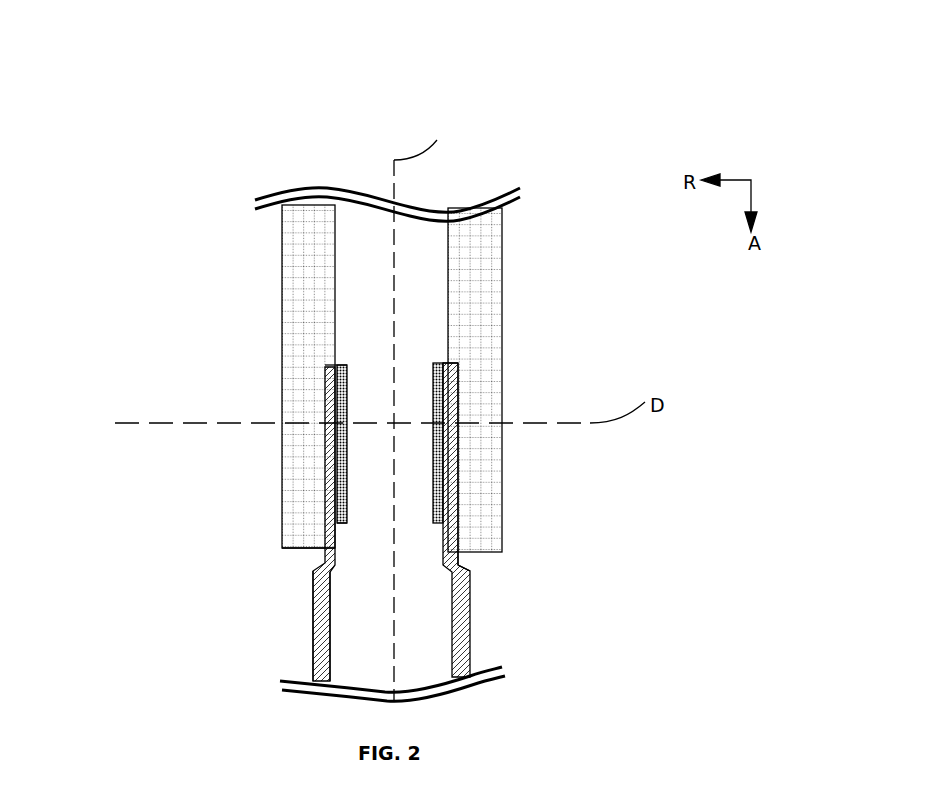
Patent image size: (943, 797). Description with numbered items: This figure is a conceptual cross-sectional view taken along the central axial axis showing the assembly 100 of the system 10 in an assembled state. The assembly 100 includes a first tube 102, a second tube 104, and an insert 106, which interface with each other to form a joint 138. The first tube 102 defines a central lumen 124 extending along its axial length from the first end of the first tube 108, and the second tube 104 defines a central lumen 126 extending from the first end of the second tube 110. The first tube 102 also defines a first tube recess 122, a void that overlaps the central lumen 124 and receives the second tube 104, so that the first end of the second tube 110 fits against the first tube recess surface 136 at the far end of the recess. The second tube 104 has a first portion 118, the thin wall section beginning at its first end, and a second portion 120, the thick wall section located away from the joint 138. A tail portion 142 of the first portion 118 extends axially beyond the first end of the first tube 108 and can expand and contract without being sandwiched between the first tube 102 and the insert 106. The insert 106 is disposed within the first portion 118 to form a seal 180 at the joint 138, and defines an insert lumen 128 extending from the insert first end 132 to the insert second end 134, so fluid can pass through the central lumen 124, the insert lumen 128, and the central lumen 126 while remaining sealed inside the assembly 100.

The system 10 is at (147, 88).
The assembly 100 is at (117, 248).
The first tube 102 is at (217, 313).
The second tube 104 is at (313, 578).
The insert 106 is at (333, 477).
The first end of the first tube 108 is at (307, 547).
The first end of the second tube 110 is at (452, 363).
The first portion 118 is at (460, 402).
The second portion 120 is at (335, 642).
The first tube recess 122 is at (448, 360).
The central lumen 124 is at (372, 240).
The central lumen 126 is at (405, 622).
The insert lumen 128 is at (423, 458).
The insert first end 132 is at (328, 402).
The insert second end 134 is at (345, 525).
The first tube recess surface 136 is at (336, 362).
The joint 138 is at (585, 457).
The tail portion 142 is at (470, 561).
The seal 180 is at (163, 468).